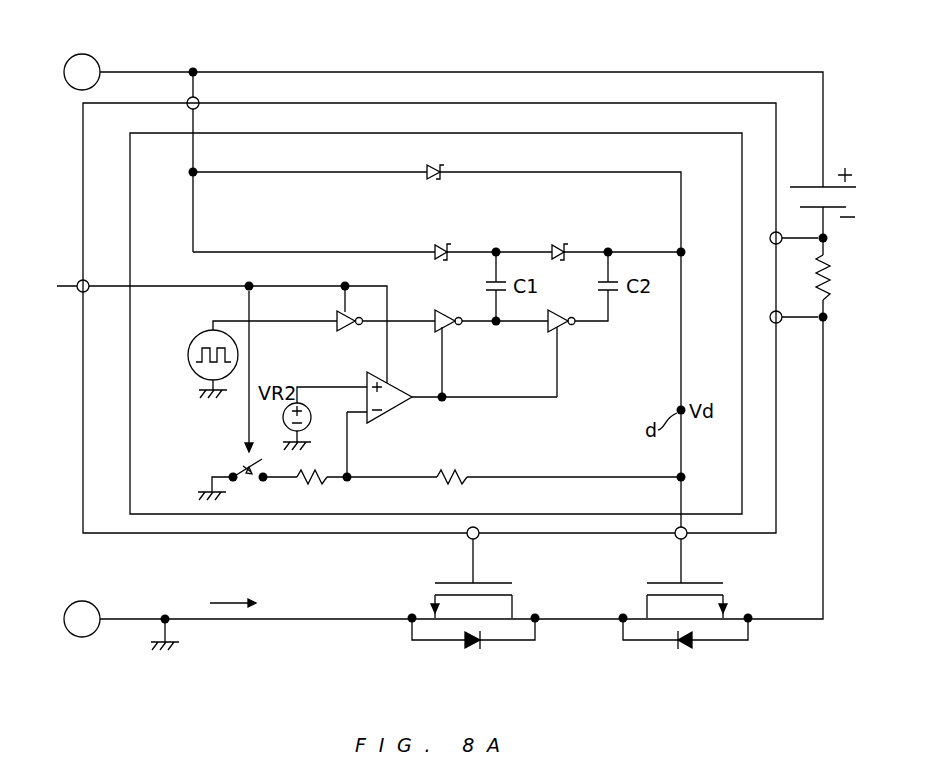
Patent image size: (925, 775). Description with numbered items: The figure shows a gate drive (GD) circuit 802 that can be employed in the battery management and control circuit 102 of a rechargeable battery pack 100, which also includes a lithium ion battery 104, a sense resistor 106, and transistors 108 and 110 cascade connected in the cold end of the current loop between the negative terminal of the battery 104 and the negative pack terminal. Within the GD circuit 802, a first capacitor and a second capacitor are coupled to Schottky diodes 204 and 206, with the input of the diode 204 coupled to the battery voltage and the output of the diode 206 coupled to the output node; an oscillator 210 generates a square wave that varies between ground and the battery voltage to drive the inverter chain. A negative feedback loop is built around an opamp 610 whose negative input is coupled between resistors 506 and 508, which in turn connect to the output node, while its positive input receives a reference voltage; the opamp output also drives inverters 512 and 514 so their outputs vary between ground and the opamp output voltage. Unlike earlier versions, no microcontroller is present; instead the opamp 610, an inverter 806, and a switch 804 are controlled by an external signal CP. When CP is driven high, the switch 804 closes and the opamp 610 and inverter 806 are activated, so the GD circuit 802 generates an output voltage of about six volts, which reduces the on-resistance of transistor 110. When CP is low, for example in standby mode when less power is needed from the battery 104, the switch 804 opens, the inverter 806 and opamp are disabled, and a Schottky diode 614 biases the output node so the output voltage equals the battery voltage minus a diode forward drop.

The rechargeable battery pack 100 is at (831, 31).
The battery management and control (BMC) circuit 102 is at (772, 128).
The GD circuit 802 is at (732, 158).
The lithium ion battery cell 104 is at (812, 185).
The sense resistor 106 is at (815, 282).
The transistor 108 is at (488, 583).
The transistor 110 is at (698, 583).
The Schottky diode 204 is at (437, 247).
The Schottky diode 206 is at (554, 247).
The oscillator 210 is at (193, 348).
The resistor 506 is at (330, 483).
The resistor 508 is at (467, 483).
The inverter 512 is at (455, 329).
The inverter 514 is at (568, 329).
The opamp 610 is at (384, 412).
The Schottky diode 614 is at (424, 167).
The switch 804 is at (232, 473).
The inverter 806 is at (343, 329).